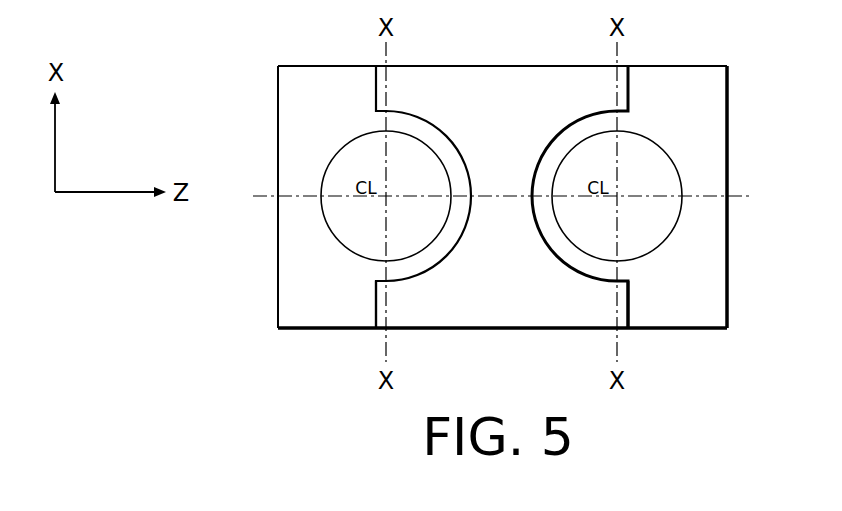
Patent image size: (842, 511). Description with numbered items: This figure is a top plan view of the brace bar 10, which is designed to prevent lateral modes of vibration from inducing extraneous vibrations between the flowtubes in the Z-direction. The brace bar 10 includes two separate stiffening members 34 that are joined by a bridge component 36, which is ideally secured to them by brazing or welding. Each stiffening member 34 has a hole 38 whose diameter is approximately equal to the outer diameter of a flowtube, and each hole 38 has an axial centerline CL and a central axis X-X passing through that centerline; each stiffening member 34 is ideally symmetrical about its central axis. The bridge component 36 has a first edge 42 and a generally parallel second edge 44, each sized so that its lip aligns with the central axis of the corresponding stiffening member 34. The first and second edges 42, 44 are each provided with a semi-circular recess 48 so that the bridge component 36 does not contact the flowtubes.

The brace bar 10 is at (214, 323).
The stiffening member 34 is at (290, 88).
The bridge component 36 is at (512, 74).
The hole 38 is at (349, 247).
The first edge 42 is at (375, 312).
The second edge 44 is at (627, 312).
The semi-circular recess 48 is at (420, 122).